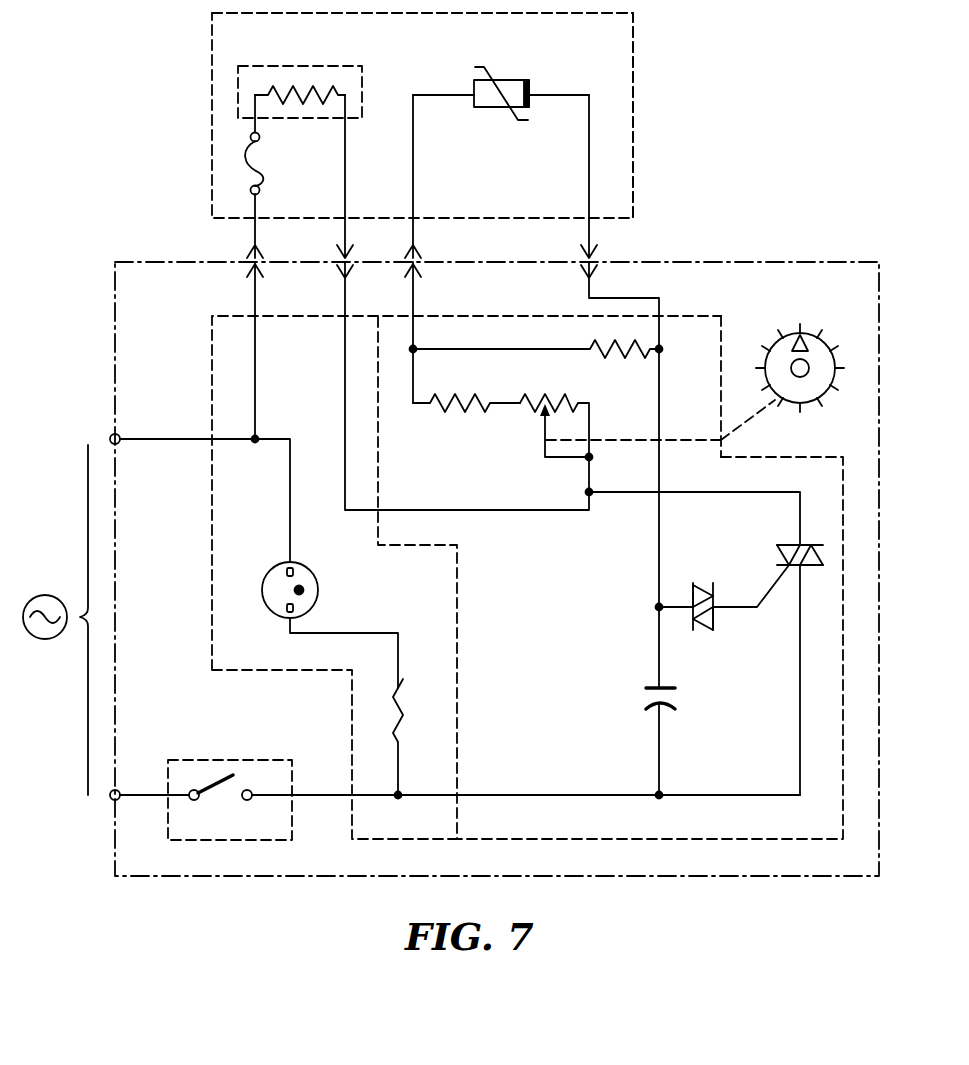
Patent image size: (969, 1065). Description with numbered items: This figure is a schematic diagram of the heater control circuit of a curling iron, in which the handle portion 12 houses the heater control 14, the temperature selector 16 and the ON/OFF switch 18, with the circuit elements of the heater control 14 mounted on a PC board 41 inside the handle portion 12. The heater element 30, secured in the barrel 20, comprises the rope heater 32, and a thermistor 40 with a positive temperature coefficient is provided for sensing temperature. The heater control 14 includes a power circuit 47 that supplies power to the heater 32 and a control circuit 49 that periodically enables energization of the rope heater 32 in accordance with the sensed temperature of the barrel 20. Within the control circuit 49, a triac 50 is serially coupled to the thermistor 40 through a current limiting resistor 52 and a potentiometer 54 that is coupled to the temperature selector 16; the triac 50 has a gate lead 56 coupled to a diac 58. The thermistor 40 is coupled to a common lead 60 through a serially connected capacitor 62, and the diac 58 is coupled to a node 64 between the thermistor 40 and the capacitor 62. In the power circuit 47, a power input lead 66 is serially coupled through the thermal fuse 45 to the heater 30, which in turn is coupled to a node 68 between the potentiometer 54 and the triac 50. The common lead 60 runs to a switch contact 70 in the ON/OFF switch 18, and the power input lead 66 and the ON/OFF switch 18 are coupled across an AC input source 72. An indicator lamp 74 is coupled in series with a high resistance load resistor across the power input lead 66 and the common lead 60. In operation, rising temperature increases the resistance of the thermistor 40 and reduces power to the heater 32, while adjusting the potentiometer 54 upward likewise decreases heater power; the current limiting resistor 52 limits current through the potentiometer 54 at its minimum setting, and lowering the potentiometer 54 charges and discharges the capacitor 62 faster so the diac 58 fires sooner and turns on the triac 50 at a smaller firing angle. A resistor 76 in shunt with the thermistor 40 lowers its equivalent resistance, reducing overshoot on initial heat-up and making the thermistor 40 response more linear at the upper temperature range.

The handle portion 12 is at (683, 880).
The heater control 14 is at (762, 171).
The temperature selector 16 is at (820, 393).
The ON/OFF switch 18 is at (220, 845).
The barrel 20 is at (636, 80).
The heater element 30 is at (363, 66).
The rope heater 32 is at (297, 97).
The thermistor 40 is at (513, 80).
The PC board 41 is at (722, 330).
The thermal fuse 45 is at (262, 172).
The power circuit 47 is at (306, 383).
The control circuit 49 is at (534, 580).
The triac 50 is at (778, 556).
The current limiting resistor 52 is at (452, 408).
The potentiometer 54 is at (520, 408).
The gate lead 56 is at (773, 594).
The diac 58 is at (703, 625).
The common lead 60 is at (316, 795).
The capacitor 62 is at (655, 705).
The node 64 is at (657, 608).
The power input lead 66 is at (150, 439).
The node 68 is at (592, 496).
The switch contact 70 is at (217, 775).
The AC input source 72 is at (45, 597).
The indicator lamp 74 is at (318, 585).
The resistor 76 is at (600, 352).